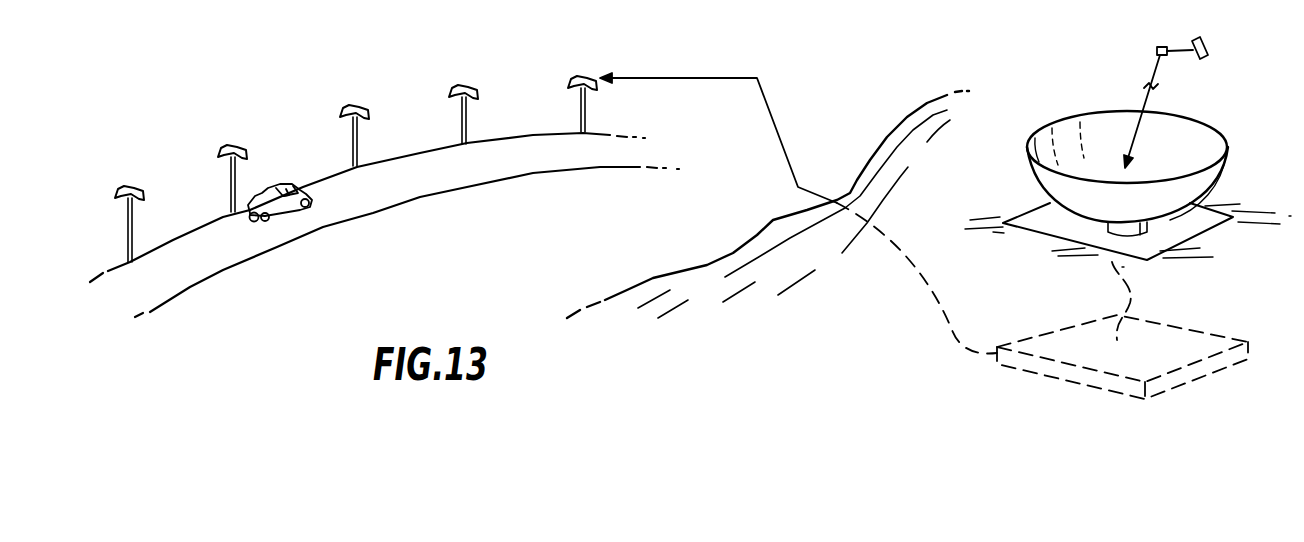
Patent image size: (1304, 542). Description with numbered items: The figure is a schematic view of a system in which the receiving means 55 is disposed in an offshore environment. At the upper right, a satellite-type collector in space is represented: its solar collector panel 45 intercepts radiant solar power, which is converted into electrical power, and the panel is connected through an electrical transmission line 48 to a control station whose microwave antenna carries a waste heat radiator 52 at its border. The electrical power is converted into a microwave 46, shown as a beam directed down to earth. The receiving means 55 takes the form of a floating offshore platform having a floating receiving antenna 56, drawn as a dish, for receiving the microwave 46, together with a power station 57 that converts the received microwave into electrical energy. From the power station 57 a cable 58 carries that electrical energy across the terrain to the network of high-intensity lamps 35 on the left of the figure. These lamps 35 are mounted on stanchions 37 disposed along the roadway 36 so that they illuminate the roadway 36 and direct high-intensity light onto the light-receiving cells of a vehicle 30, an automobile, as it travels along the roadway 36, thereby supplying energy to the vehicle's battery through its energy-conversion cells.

The vehicle 30 is at (278, 179).
The high-intensity lamps 35 is at (123, 188).
The roadway 36 is at (215, 270).
The stanchions 37 is at (134, 222).
The solar collector panel 45 is at (1203, 57).
The microwaves 46 is at (1147, 90).
The electrical transmission line 48 is at (1180, 52).
The waste heat radiator 52 is at (1156, 51).
The receiving means 55 is at (1218, 190).
The floating receiving antenna 56 is at (1205, 142).
The power station 57 is at (1200, 333).
The cable 58 is at (910, 268).